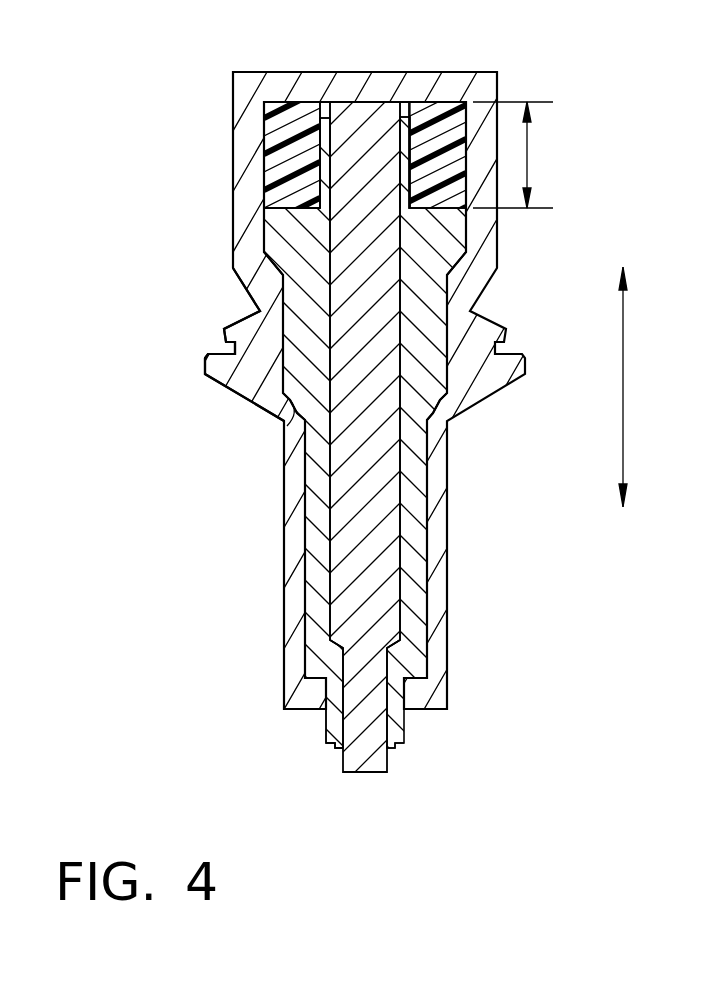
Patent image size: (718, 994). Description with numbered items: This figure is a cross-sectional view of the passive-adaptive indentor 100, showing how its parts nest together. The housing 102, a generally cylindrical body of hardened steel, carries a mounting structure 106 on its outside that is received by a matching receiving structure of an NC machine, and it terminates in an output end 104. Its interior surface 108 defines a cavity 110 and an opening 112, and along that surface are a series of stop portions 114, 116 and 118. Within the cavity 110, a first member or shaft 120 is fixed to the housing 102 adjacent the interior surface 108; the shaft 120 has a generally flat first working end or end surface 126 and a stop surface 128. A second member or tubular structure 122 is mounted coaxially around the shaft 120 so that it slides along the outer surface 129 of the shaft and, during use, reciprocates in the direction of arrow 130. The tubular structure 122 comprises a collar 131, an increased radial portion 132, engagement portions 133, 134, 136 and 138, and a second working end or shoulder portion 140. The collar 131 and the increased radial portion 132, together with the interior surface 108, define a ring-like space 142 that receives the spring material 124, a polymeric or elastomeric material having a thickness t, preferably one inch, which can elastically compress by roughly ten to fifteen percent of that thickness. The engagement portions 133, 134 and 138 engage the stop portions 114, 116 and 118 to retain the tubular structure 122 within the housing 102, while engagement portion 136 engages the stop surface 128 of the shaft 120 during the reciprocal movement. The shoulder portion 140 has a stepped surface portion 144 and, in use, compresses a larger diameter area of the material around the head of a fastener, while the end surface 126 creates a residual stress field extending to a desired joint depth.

The passive-adaptive indentor 100 is at (205, 95).
The housing 102 is at (477, 280).
The output end 104 is at (436, 736).
The mounting structure 106 is at (229, 325).
The interior surface 108 is at (428, 518).
The cavity 110 is at (374, 440).
The opening 112 is at (332, 705).
The stop portion 114 is at (456, 248).
The stop portion 116 is at (445, 392).
The stop portion 118 is at (430, 668).
The shaft 120 is at (400, 474).
The tubular structure 122 is at (303, 472).
The spring material 124 is at (436, 140).
The end surface 126 is at (372, 775).
The stop surface 128 is at (406, 649).
The outer surface 129 is at (401, 84).
The arrow 130 is at (624, 361).
The collar 131 is at (325, 172).
The increased radial portion 132 is at (282, 222).
The engagement portion 133 is at (262, 267).
The engagement portion 134 is at (283, 436).
The engagement portion 136 is at (331, 647).
The engagement portion 138 is at (318, 680).
The shoulder portion 140 is at (322, 763).
The ring-like space 142 is at (282, 138).
The surface portion 144 is at (392, 748).
The thickness t is at (529, 160).